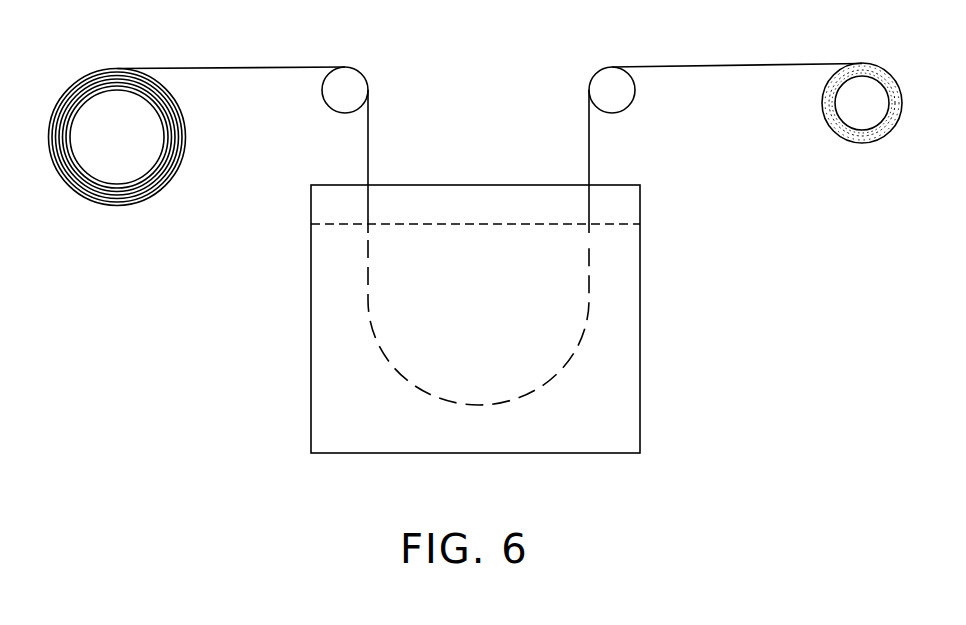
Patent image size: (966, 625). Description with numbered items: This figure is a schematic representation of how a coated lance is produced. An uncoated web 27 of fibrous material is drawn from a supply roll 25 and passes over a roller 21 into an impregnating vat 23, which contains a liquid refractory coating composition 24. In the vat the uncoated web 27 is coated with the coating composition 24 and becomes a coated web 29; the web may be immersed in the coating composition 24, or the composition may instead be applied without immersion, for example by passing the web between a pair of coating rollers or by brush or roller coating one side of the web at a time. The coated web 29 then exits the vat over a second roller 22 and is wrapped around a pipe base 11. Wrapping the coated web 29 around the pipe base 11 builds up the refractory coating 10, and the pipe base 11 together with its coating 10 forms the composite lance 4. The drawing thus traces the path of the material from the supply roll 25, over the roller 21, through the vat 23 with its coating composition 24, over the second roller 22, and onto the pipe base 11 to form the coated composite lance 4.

The composite lance 4 is at (854, 146).
The refractory coating 10 is at (892, 124).
The pipe base 11 is at (832, 125).
The roller 21 is at (333, 100).
The second roller 22 is at (618, 95).
The impregnating vat 23 is at (310, 287).
The coating composition 24 is at (466, 224).
The supply roll 25 is at (137, 208).
The uncoated web 27 is at (249, 67).
The coated web 29 is at (588, 137).